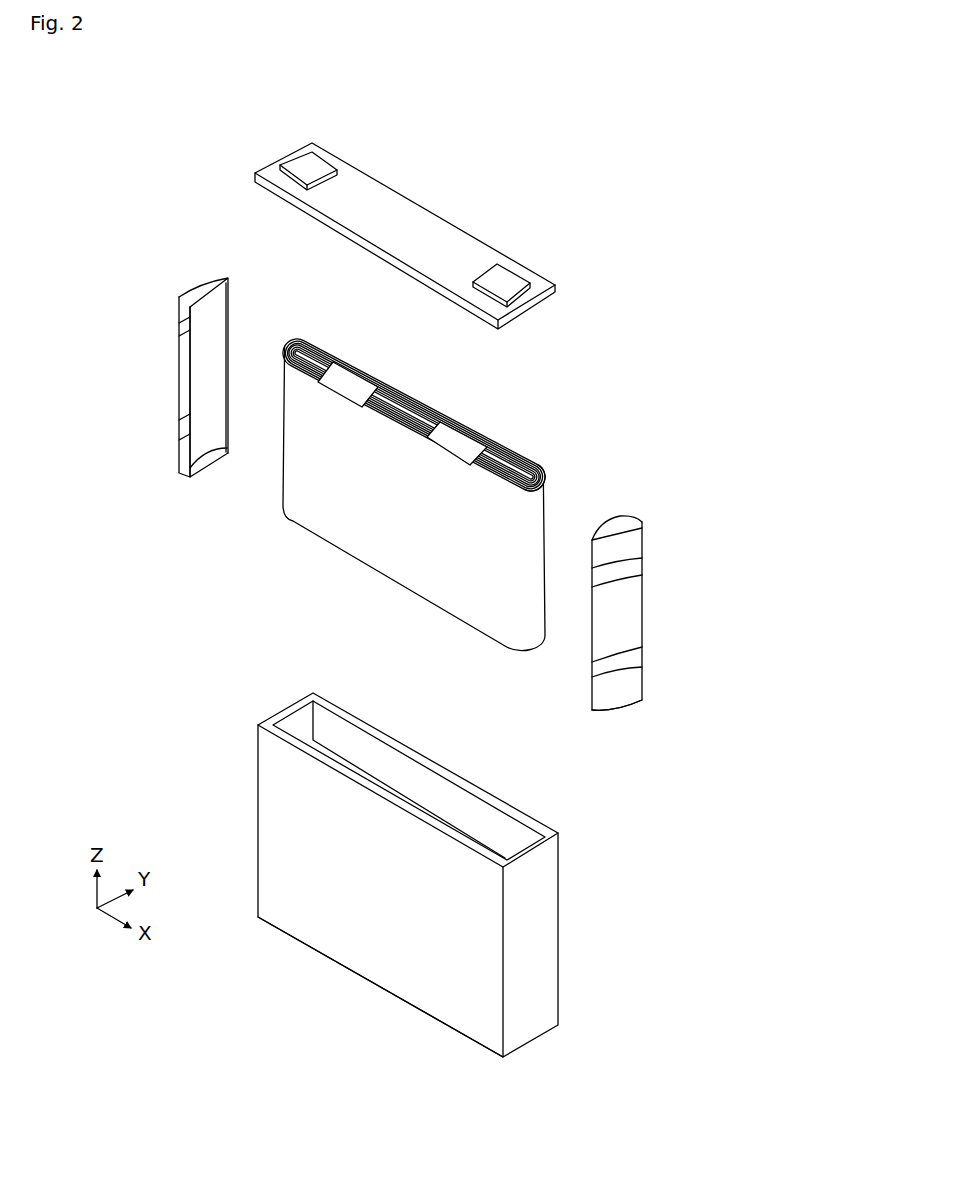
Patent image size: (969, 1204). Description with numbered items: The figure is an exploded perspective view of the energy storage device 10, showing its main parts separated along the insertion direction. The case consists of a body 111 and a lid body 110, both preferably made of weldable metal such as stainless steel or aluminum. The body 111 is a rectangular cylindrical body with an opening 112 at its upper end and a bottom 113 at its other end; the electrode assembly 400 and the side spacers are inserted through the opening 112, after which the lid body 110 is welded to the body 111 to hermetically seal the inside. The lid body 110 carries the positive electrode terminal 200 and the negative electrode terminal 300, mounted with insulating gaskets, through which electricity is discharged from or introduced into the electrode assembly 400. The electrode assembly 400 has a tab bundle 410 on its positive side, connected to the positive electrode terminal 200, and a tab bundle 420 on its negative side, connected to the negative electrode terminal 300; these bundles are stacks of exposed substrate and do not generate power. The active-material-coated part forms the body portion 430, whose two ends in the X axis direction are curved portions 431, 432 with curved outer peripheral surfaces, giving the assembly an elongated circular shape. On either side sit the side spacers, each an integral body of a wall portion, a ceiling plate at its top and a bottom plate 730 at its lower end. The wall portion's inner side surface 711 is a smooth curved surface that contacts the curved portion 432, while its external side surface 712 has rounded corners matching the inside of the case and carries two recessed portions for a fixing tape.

The energy storage device 10 is at (508, 167).
The lid body 110 is at (470, 240).
The body 111 is at (545, 888).
The opening 112 is at (293, 718).
The bottom 113 is at (380, 990).
The positive electrode terminal 200 is at (310, 163).
The negative electrode terminal 300 is at (508, 276).
The electrode assembly 400 is at (459, 471).
The tab bundle 410 is at (355, 375).
The tab bundle 420 is at (457, 437).
The body portion 430 is at (420, 588).
The curved portion 431 is at (292, 342).
The curved portion 432 is at (543, 497).
The inner side surface 711 is at (218, 347).
The external side surface 712 is at (635, 687).
The bottom plate 730 is at (202, 467).